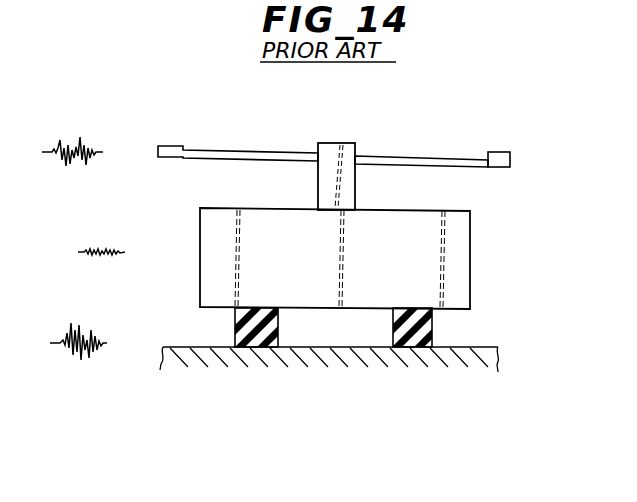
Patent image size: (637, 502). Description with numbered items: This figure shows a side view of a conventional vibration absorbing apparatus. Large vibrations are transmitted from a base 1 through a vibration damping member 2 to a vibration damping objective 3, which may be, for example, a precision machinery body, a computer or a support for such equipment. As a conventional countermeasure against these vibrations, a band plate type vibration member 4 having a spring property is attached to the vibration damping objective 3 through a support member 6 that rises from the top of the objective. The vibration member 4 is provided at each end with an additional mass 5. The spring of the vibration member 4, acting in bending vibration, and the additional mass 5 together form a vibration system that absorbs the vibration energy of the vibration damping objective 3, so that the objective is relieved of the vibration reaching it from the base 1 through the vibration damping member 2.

The base 1 is at (492, 347).
The vibration damping member 2 is at (433, 325).
The vibration damping objective 3 is at (466, 249).
The band plate type vibration member 4 is at (415, 157).
The additional mass 5 is at (500, 152).
The support member 6 is at (331, 150).